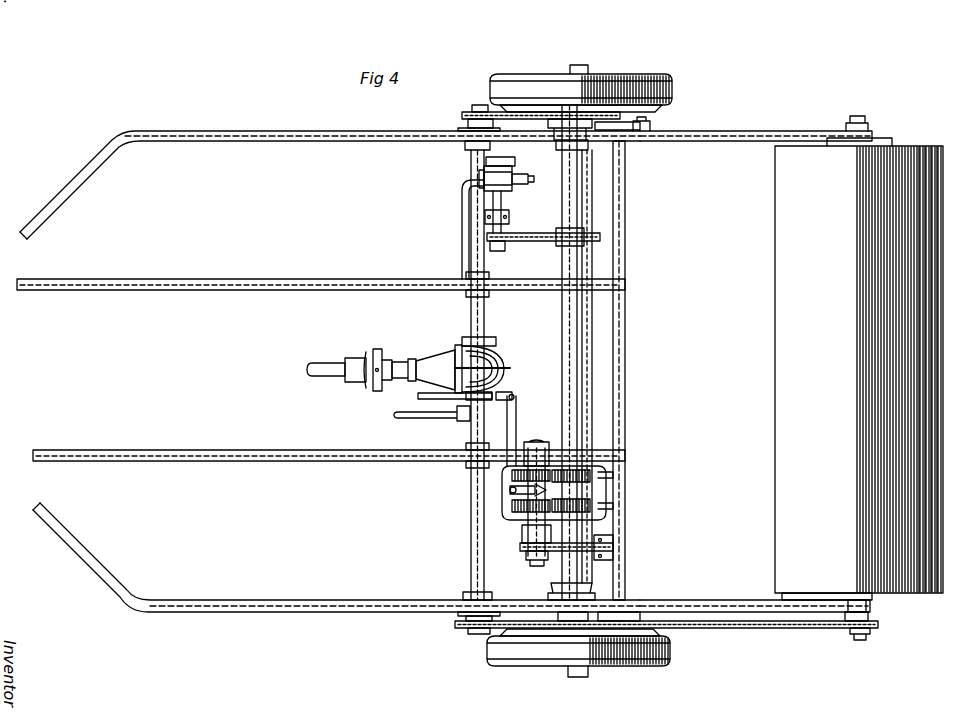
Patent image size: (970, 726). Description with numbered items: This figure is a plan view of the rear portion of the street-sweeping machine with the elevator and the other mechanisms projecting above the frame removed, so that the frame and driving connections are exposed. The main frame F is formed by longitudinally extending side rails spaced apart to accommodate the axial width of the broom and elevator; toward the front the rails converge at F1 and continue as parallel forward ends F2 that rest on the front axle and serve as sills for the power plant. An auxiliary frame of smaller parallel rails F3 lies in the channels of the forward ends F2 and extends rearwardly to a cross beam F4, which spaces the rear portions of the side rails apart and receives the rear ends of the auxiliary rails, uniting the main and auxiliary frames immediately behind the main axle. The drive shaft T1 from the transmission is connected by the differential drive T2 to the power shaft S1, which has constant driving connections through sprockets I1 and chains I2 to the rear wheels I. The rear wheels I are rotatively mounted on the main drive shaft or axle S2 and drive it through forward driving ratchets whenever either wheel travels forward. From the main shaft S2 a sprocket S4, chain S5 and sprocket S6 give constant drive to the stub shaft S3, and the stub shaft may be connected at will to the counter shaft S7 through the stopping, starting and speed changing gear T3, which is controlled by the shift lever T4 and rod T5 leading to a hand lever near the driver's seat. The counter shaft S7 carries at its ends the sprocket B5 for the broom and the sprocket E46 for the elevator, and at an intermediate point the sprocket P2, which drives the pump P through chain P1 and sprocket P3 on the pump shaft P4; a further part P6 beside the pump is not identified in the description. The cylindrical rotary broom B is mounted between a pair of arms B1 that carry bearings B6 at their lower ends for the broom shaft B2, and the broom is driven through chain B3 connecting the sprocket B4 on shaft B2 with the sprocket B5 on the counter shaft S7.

The frame F is at (540, 372).
The converging portion of side rails F1 is at (134, 598).
The parallel forward ends of main frame F2 is at (130, 145).
The auxiliary frame rails F3 is at (230, 278).
The cross beam F4 is at (626, 417).
The rotary broom B is at (859, 369).
The broom arms B1 is at (747, 140).
The broom shaft B2 is at (870, 621).
The broom drive chain B3 is at (787, 629).
The broom shaft sprocket B4 is at (868, 636).
The counter shaft broom sprocket B5 is at (526, 649).
The broom shaft bearings B6 is at (868, 610).
The rear wheels I is at (673, 85).
The power shaft sprockets I1 is at (462, 117).
The wheel drive chains I2 is at (516, 113).
The elevator drive sprocket E46 is at (572, 110).
The power shaft S1 is at (470, 557).
The main drive shaft S2 is at (592, 334).
The stub shaft S3 is at (536, 445).
The main shaft sprocket S4 is at (600, 545).
The stub shaft drive chain S5 is at (614, 548).
The stub shaft sprocket S6 is at (528, 560).
The counter shaft S7 is at (582, 125).
The pump P is at (484, 176).
The pump drive chain P1 is at (532, 233).
The counter shaft pump sprocket P2 is at (588, 232).
The pump shaft sprocket P3 is at (498, 251).
The pump shaft P4 is at (462, 210).
The pump nozzle P6 is at (522, 176).
The drive shaft T1 is at (330, 368).
The differential drive T2 is at (458, 350).
The stopping, starting and speed changing gear T3 is at (522, 493).
The shift lever T4 is at (503, 470).
The shift rod T5 is at (418, 396).